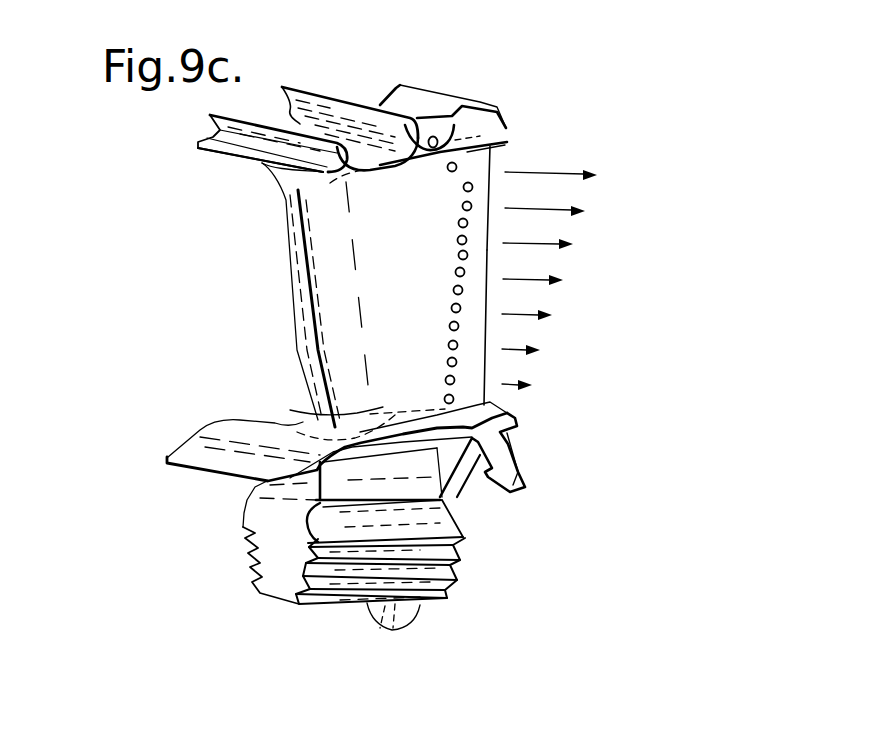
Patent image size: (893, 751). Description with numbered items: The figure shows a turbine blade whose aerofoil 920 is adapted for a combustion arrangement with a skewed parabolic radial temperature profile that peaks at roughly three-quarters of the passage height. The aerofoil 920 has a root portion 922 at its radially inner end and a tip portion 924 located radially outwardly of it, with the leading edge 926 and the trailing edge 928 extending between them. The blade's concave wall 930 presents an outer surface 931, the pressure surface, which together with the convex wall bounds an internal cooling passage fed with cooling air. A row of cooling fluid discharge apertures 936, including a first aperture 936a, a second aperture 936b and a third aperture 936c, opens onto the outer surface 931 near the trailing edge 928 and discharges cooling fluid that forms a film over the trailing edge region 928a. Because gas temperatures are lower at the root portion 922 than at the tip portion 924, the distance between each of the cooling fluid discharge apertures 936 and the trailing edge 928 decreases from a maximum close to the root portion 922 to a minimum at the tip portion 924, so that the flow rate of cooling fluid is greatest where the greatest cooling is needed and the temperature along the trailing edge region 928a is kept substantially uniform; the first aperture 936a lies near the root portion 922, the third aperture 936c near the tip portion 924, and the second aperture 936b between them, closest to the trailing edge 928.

The aerofoil 920 is at (462, 80).
The root portion 922 is at (368, 437).
The tip portion 924 is at (398, 162).
The leading edge 926 is at (302, 309).
The trailing edge 928 is at (488, 253).
The trailing edge region 928a is at (500, 155).
The concave wall 930 is at (410, 403).
The outer surface 931 is at (310, 420).
The cooling fluid discharge apertures 936 is at (455, 381).
The first aperture 936a is at (472, 206).
The second aperture 936b is at (473, 187).
The third aperture 936c is at (457, 167).